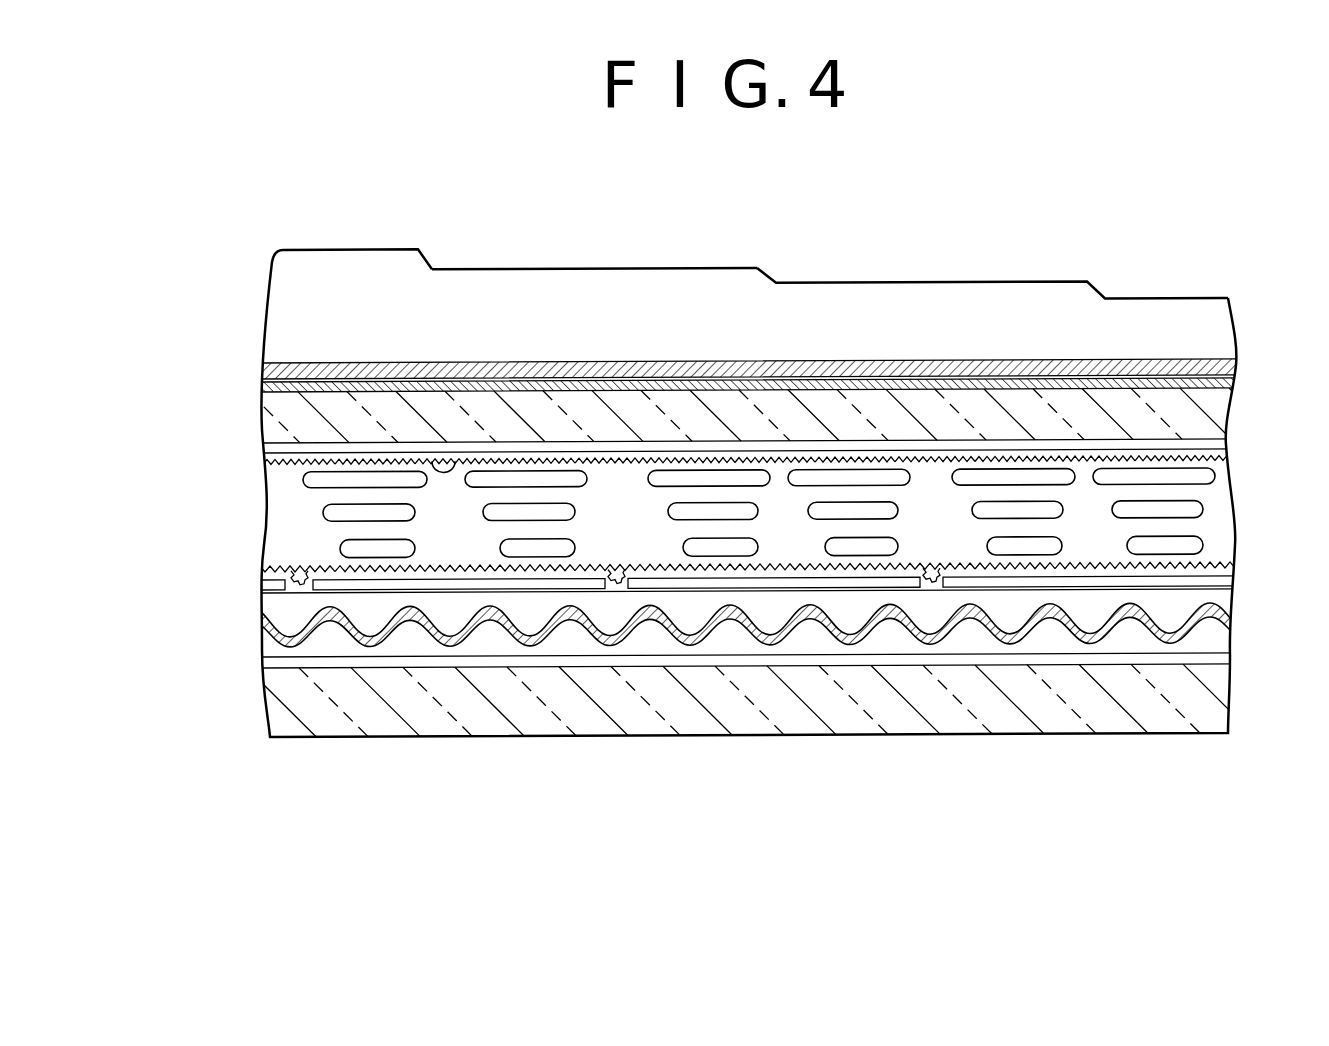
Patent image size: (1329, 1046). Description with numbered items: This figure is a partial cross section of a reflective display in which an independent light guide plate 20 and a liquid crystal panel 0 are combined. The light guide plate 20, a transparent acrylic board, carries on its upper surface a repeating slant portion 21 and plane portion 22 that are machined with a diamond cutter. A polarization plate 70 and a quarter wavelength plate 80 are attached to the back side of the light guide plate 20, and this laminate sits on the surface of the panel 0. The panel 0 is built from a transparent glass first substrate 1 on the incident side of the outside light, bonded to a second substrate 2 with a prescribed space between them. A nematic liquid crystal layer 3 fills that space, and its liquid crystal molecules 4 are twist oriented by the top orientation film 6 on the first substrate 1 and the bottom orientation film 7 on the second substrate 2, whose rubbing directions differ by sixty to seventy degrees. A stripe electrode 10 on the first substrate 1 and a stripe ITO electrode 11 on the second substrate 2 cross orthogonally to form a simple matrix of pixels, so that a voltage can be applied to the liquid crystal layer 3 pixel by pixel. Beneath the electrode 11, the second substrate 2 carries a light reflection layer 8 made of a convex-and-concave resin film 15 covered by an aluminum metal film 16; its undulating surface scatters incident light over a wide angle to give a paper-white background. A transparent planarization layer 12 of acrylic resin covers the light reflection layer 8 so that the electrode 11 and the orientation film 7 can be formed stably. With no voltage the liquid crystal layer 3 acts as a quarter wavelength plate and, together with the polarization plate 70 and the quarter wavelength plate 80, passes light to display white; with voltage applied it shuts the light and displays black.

The panel 0 is at (243, 396).
The first substrate 1 is at (1208, 414).
The second substrate 2 is at (1215, 690).
The nematic liquid crystal layer 3 is at (1245, 456).
The liquid crystal molecules 4 is at (303, 482).
The orientation film 6 is at (462, 458).
The orientation film 7 is at (322, 568).
The light reflection layer 8 is at (1245, 591).
The electrode 10 is at (1213, 453).
The electrode 11 is at (1220, 587).
The planarization layer 12 is at (293, 613).
The resin film 15 is at (570, 644).
The metal film 16 is at (445, 645).
The light guide plate 20 is at (243, 252).
The slant portion 21 is at (776, 272).
The plane portion 22 is at (722, 270).
The polarization plate 70 is at (1236, 373).
The quarter wavelength plate 80 is at (1236, 390).